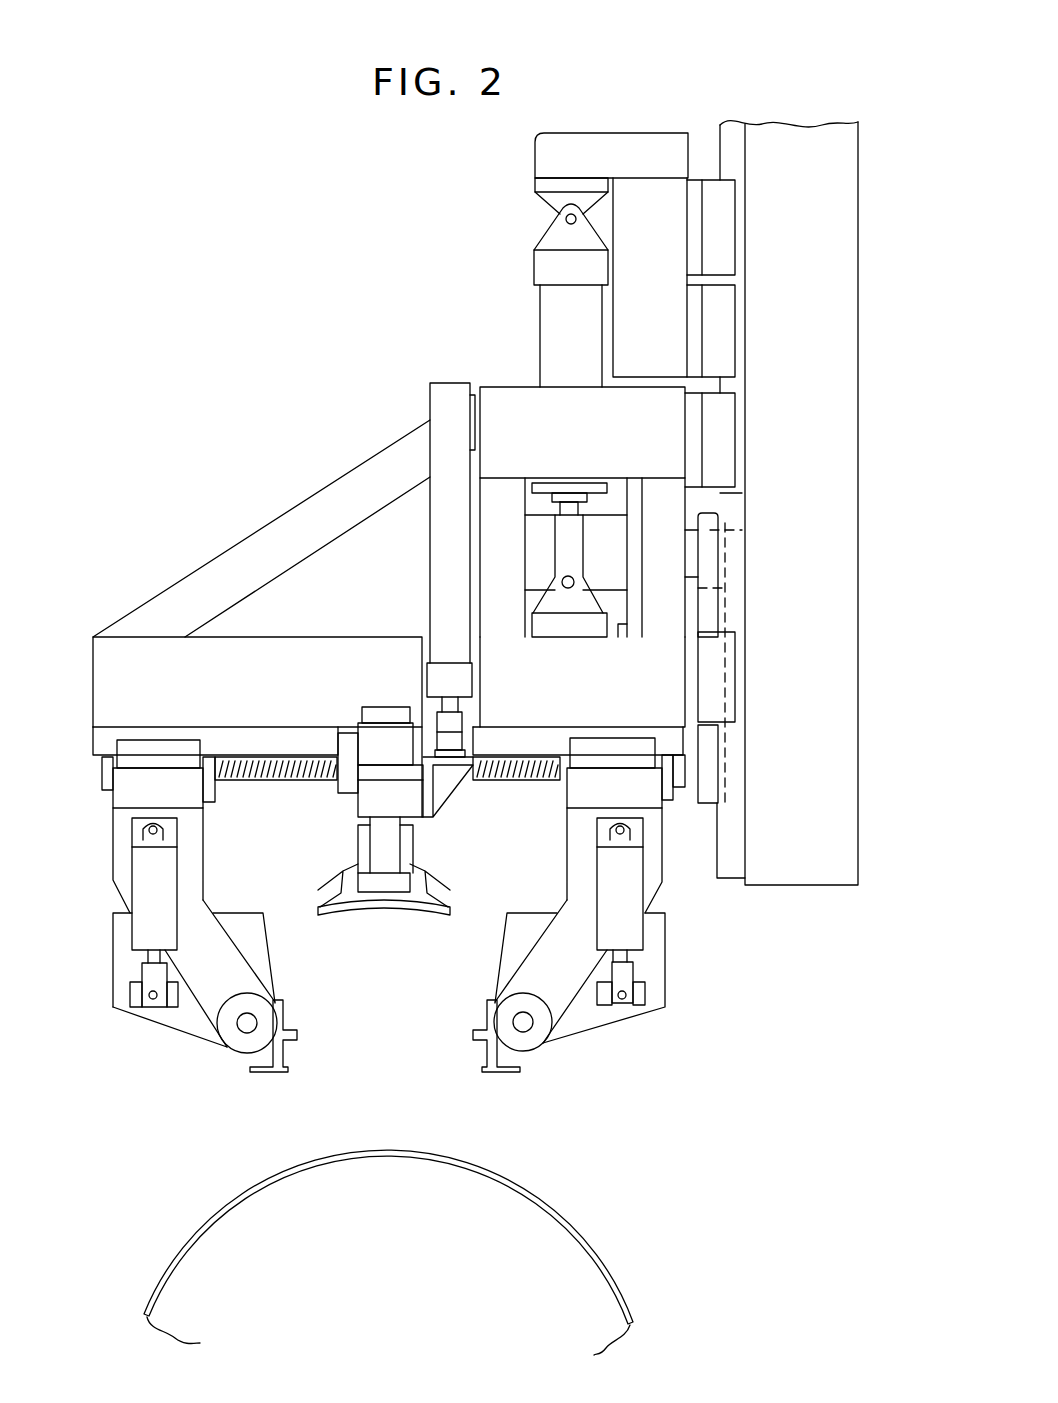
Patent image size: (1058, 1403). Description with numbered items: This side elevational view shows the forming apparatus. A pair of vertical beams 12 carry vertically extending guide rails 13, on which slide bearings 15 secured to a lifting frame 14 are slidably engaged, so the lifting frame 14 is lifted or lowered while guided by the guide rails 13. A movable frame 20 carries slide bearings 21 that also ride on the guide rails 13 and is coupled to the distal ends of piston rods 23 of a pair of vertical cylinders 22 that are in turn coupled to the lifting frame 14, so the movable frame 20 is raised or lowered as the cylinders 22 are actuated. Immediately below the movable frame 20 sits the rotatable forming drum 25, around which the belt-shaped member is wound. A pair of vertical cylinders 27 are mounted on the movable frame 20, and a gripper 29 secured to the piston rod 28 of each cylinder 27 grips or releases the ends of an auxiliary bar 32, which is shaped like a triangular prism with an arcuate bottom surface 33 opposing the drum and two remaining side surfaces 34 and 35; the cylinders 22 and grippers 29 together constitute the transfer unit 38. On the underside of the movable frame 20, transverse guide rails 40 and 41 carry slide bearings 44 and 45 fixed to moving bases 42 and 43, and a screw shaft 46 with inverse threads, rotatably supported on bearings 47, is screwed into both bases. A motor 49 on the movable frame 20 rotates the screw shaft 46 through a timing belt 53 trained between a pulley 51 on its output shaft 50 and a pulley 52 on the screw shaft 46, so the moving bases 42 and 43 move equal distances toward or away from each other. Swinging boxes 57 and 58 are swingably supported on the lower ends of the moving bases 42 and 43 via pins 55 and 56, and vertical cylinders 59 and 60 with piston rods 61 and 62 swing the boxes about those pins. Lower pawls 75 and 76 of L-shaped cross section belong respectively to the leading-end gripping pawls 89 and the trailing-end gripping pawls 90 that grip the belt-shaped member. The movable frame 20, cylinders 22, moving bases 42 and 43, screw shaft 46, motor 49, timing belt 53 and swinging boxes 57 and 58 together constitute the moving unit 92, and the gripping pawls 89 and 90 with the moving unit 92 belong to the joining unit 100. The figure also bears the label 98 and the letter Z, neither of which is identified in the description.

The vertical beams 12 is at (796, 872).
The guide rails 13 is at (720, 150).
The lifting frame 14 is at (536, 168).
The slide bearings 15 is at (728, 264).
The movable frame 20 is at (352, 652).
The slide bearings 21 is at (720, 445).
The vertical cylinders 22 is at (548, 310).
The piston rods 23 is at (568, 545).
The forming drum 25 is at (548, 1230).
The vertical cylinders 27 is at (442, 541).
The piston rod 28 is at (455, 720).
The gripper 29 is at (366, 790).
The auxiliary bar 32 is at (396, 912).
The bottom surface 33 is at (364, 918).
The side surface 34 is at (332, 878).
The side surface 35 is at (428, 873).
The transfer unit 38 is at (410, 414).
The guide rail 40 is at (246, 748).
The guide rail 41 is at (552, 740).
The moving base 42 is at (114, 830).
The moving base 43 is at (646, 868).
The slide bearing 44 is at (164, 748).
The slide bearing 45 is at (618, 742).
The screw shaft 46 is at (284, 770).
The bearings 47 is at (104, 770).
The motor 49 is at (536, 552).
The output shaft 50 is at (692, 557).
The pulley 51 is at (728, 524).
The pulley 52 is at (732, 745).
The timing belt 53 is at (710, 613).
The pin 55 is at (240, 1030).
The pin 56 is at (528, 1028).
The swinging box 57 is at (112, 942).
The swinging box 58 is at (656, 944).
The vertical cylinder 59 is at (165, 882).
The vertical cylinder 60 is at (604, 874).
The piston rod 61 is at (144, 970).
The piston rod 62 is at (630, 976).
The lower pawl 75 is at (264, 1074).
The lower pawl 76 is at (505, 1074).
The leading-end gripping pawls 89 is at (291, 1056).
The trailing-end gripping pawls 90 is at (490, 1058).
The moving unit 92 is at (252, 504).
The carriage assembly 98 is at (298, 400).
The joining unit 100 is at (130, 1020).
The drum axis surface Z is at (532, 1196).